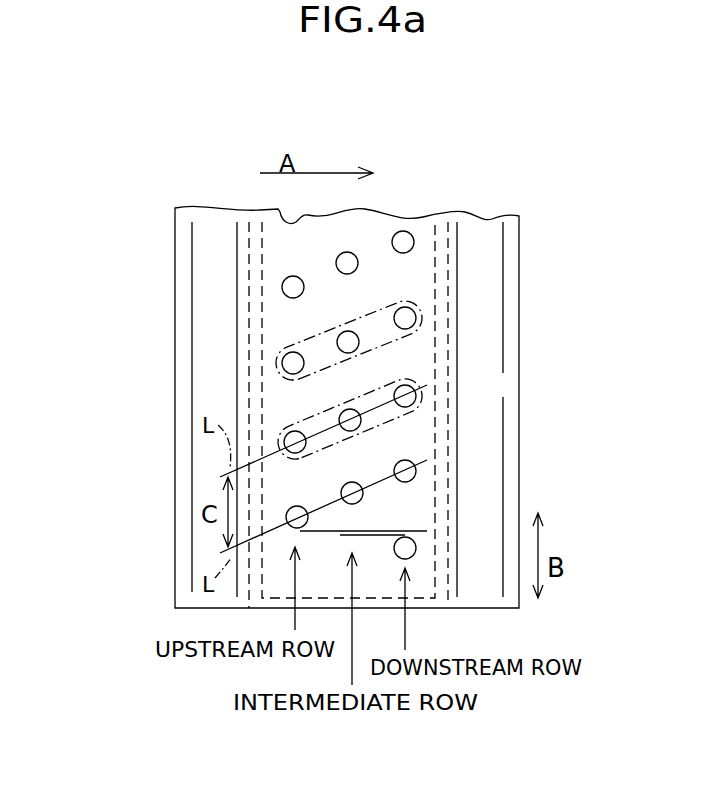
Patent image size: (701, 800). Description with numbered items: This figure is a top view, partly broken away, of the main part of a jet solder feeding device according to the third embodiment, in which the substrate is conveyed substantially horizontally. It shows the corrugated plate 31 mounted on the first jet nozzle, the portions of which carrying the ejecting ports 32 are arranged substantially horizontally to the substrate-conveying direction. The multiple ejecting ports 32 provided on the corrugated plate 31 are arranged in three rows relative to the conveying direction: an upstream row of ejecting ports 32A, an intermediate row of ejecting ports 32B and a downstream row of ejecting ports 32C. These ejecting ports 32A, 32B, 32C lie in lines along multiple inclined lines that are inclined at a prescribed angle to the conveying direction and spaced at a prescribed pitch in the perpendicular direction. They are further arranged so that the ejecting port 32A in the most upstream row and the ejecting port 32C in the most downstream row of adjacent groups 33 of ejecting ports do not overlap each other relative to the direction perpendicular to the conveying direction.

The corrugated plate 31 is at (204, 322).
The ejecting ports 32 is at (346, 395).
The upstream row of ejecting ports 32A is at (285, 361).
The intermediate row of ejecting ports 32B is at (355, 345).
The downstream row of ejecting ports 32C is at (405, 320).
The groups of ejecting ports 33 is at (420, 312).